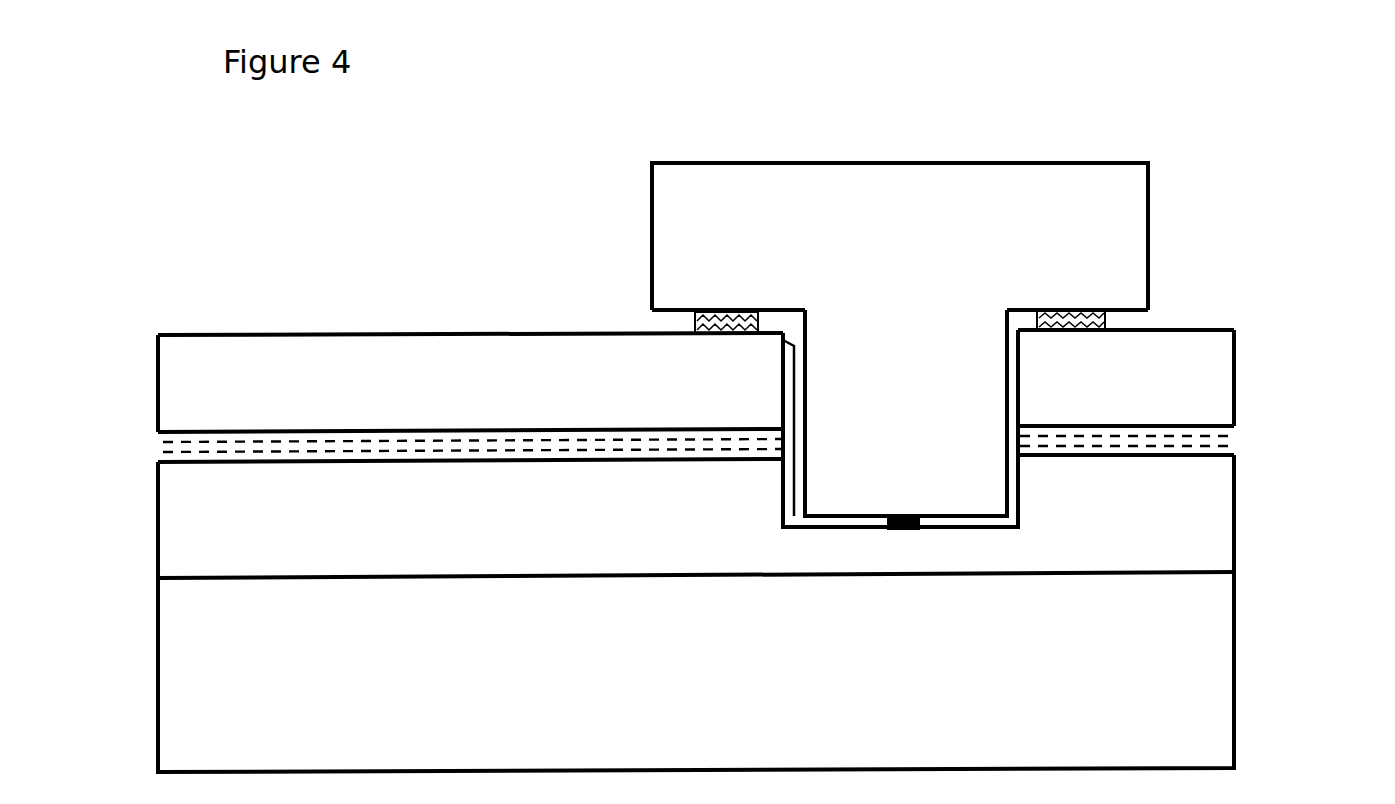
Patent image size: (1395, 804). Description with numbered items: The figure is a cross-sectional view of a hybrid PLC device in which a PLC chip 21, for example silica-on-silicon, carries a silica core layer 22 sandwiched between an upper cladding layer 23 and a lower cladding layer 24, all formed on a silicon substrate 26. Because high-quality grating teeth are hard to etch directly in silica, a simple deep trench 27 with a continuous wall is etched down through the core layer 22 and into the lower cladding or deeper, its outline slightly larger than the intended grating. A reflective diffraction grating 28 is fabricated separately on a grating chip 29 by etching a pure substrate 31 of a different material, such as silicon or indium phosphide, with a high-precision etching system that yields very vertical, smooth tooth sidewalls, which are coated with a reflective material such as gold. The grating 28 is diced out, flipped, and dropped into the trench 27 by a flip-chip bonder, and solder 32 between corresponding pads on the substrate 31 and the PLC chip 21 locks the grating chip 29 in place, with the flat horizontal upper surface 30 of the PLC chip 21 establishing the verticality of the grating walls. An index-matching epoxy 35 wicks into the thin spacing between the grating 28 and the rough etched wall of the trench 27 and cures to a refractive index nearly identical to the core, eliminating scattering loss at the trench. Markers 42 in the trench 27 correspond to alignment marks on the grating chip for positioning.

The PLC chip 21 is at (232, 335).
The core layer 22 is at (160, 448).
The upper cladding layer 23 is at (369, 396).
The lower cladding layer 24 is at (404, 516).
The silicon substrate 26 is at (242, 727).
The trench 27 is at (1021, 498).
The reflective diffraction grating 28 is at (912, 446).
The grating chip 29 is at (760, 160).
The upper surface 30 is at (761, 372).
The substrate 31 is at (760, 227).
The solder 32 is at (697, 333).
The index-matching epoxy 35 is at (1011, 371).
The markers 42 is at (902, 530).